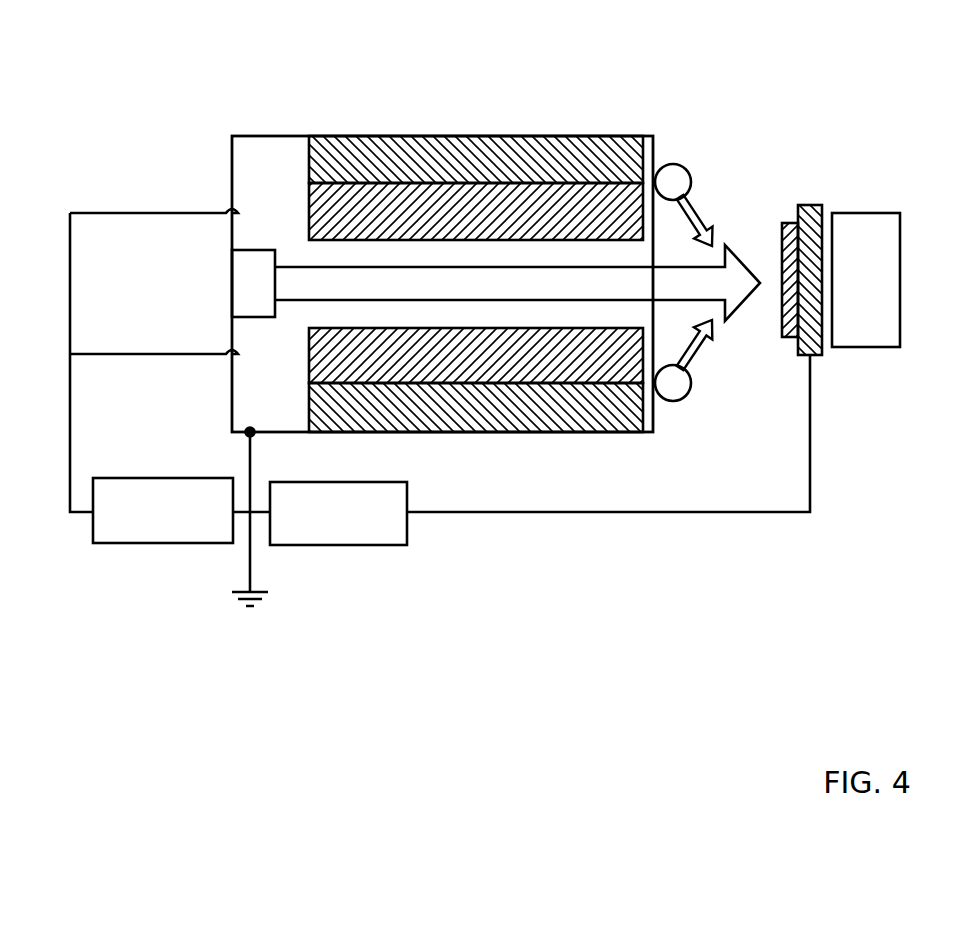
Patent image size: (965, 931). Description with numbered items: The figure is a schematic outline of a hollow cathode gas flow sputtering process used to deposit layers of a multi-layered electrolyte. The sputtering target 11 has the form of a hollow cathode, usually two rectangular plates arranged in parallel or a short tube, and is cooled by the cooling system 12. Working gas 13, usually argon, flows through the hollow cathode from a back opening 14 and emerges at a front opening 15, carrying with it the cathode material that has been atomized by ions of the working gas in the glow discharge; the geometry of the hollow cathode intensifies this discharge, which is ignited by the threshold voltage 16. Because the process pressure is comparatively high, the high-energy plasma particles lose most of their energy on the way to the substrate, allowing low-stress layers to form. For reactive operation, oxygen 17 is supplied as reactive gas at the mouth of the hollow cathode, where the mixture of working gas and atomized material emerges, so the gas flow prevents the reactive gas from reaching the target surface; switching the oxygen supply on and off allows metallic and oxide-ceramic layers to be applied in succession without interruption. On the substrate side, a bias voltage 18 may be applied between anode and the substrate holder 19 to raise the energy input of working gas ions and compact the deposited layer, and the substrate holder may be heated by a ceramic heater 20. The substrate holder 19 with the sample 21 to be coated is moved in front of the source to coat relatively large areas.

The sputtering target 11 is at (456, 213).
The cooling system 12 is at (508, 157).
The working gas 13 is at (598, 281).
The back opening 14 is at (306, 251).
The front opening 15 is at (647, 314).
The threshold voltage 16 is at (163, 510).
The oxygen 17 is at (672, 176).
The bias voltage 18 is at (338, 513).
The substrate holder 19 is at (811, 214).
The ceramic heater 20 is at (866, 280).
The sample 21 is at (789, 234).